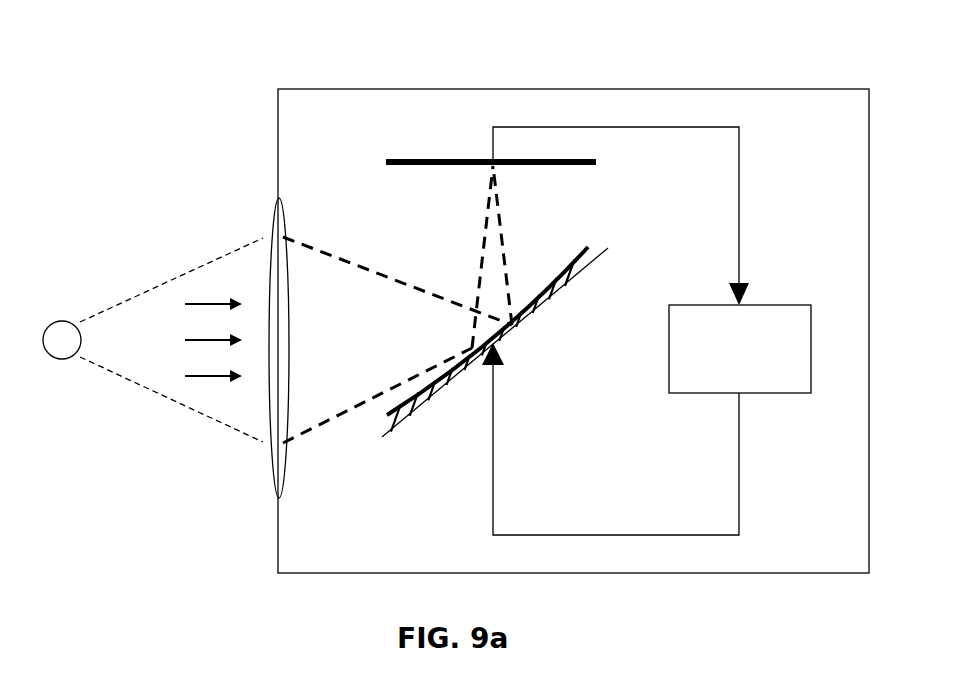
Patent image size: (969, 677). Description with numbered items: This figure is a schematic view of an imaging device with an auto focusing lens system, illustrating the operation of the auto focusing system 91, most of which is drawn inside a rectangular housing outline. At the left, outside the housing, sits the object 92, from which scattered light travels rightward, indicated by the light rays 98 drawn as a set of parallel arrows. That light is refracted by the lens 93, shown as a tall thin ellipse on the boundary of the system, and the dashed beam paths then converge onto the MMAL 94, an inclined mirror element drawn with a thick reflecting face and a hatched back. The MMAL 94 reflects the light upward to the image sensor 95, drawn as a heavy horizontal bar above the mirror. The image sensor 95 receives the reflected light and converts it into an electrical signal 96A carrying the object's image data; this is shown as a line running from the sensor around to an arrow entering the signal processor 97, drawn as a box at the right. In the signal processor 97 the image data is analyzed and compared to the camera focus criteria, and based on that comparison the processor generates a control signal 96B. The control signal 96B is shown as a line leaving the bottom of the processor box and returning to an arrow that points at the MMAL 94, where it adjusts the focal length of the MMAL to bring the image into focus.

The auto focusing system 91 is at (415, 89).
The object 92 is at (58, 323).
The lens 93 is at (280, 323).
The MMAL 94 is at (557, 288).
The image sensor 95 is at (555, 165).
The electrical signal 96A is at (739, 237).
The control signal 96B is at (707, 535).
The signal processor 97 is at (686, 369).
The light beam arrows 98 is at (208, 376).